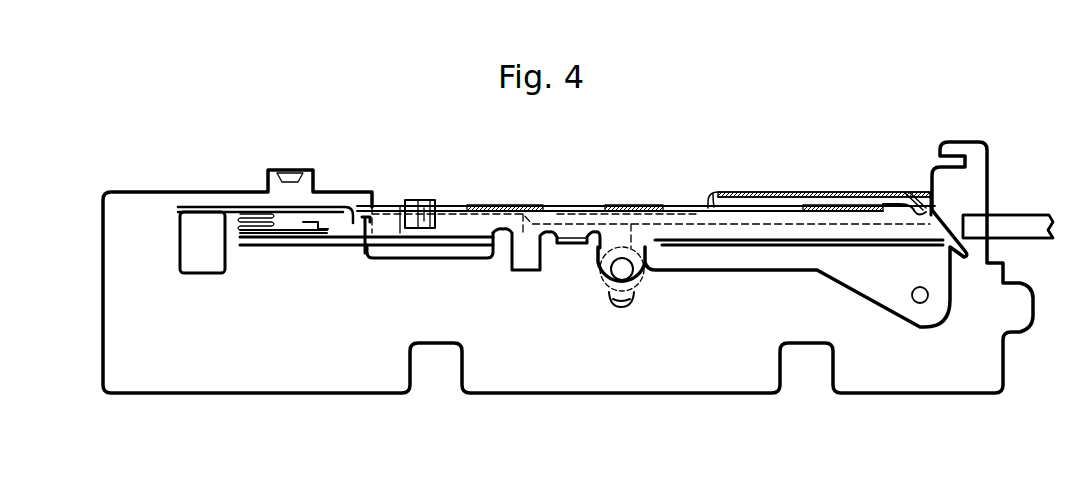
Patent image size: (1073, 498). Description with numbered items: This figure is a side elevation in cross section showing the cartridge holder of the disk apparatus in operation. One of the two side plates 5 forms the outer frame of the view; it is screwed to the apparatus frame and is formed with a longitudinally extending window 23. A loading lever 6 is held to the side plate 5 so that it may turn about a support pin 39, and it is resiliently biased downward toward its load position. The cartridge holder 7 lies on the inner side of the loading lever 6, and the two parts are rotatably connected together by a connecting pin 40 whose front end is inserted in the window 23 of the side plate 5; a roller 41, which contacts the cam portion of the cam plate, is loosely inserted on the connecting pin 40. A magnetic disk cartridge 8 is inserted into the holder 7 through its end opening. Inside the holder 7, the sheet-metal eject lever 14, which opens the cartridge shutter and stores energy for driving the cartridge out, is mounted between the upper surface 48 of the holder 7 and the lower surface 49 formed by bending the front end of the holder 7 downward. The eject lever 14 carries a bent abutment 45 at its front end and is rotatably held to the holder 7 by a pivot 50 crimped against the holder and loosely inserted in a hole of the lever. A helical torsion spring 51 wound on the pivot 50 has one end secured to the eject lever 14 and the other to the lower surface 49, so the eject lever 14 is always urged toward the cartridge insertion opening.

The side plate 5 is at (388, 378).
The loading lever 6 is at (780, 191).
The cartridge holder 7 is at (497, 205).
The magnetic disk cartridge 8 is at (1025, 217).
The eject lever 14 is at (392, 213).
The window 23 is at (623, 308).
The support pin 39 is at (920, 303).
The connecting pin 40 is at (619, 257).
The roller 41 is at (640, 205).
The bent abutment 45 is at (427, 202).
The upper surface 48 is at (253, 206).
The lower surface 49 is at (294, 247).
The pivot 50 is at (237, 212).
The helical torsion spring 51 is at (324, 212).